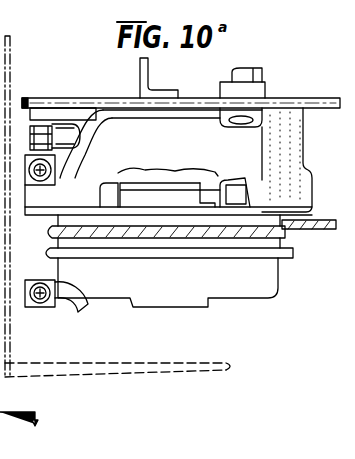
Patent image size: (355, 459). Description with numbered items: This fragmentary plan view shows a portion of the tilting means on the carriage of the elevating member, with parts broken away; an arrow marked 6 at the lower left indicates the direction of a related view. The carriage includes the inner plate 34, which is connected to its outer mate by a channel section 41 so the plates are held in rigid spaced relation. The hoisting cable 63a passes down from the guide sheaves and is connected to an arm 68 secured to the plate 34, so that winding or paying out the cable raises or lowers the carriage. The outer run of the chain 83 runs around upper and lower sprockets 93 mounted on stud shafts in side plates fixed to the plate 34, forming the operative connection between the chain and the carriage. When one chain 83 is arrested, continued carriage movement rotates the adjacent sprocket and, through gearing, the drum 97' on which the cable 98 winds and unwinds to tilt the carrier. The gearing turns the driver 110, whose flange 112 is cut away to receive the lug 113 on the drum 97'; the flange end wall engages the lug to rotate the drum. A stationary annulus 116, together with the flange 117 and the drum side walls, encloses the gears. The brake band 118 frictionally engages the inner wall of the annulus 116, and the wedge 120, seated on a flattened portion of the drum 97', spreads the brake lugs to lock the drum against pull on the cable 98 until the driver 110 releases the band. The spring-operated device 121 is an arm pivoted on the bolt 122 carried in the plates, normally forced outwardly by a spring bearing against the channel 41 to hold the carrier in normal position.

The section line 6 is at (20, 428).
The inner plate 34 is at (338, 98).
The channel section 41 is at (150, 82).
The cable 63a is at (55, 310).
The arm 68 is at (118, 118).
The chain 83 is at (17, 120).
The sprocket 93 is at (65, 137).
The drum 97' is at (188, 261).
The cable 98 is at (295, 238).
The driver 110 is at (170, 168).
The flange 112 is at (222, 175).
The lug 113 is at (197, 183).
The annulus 116 is at (303, 157).
The flange 117 is at (311, 213).
The brake band 118 is at (106, 192).
The wedge 120 is at (177, 183).
The spring-operated device 121 is at (265, 86).
The bolt 122 is at (253, 72).